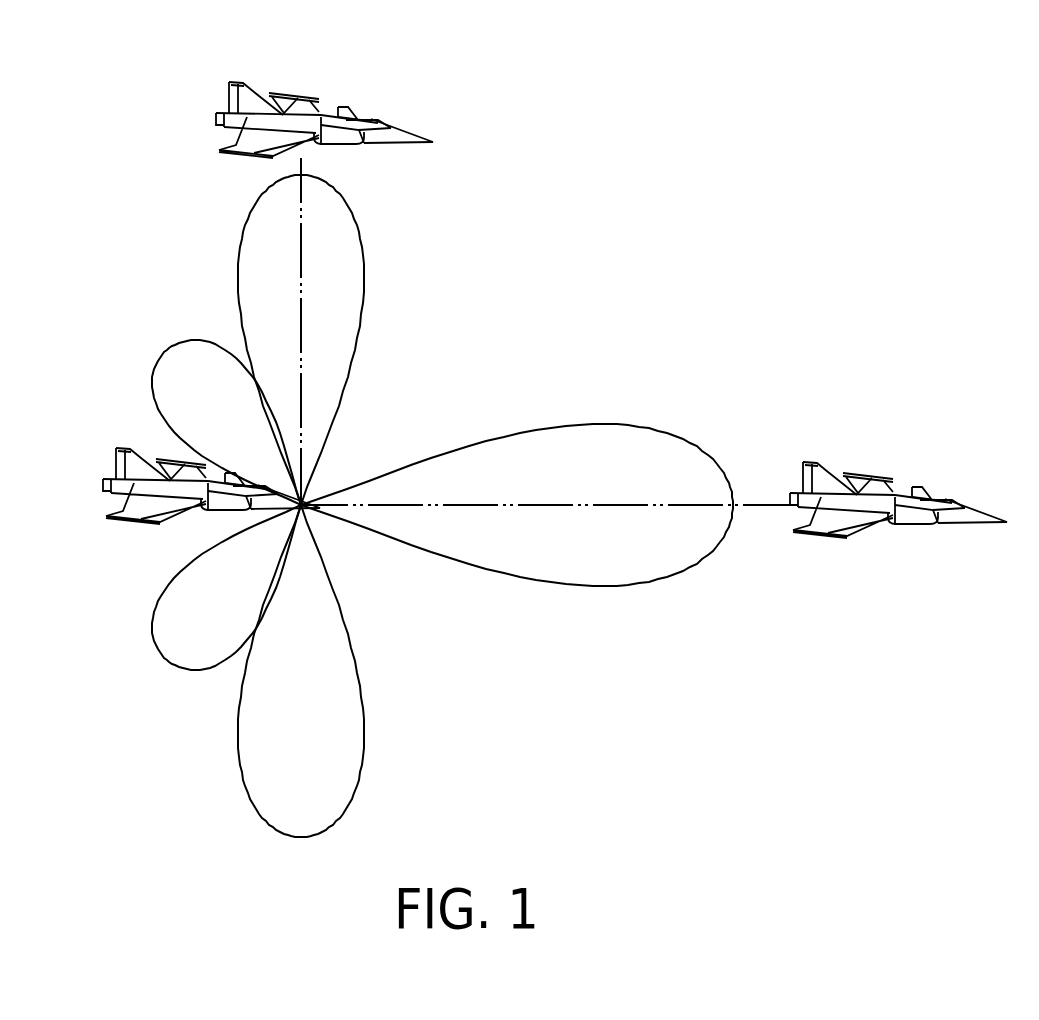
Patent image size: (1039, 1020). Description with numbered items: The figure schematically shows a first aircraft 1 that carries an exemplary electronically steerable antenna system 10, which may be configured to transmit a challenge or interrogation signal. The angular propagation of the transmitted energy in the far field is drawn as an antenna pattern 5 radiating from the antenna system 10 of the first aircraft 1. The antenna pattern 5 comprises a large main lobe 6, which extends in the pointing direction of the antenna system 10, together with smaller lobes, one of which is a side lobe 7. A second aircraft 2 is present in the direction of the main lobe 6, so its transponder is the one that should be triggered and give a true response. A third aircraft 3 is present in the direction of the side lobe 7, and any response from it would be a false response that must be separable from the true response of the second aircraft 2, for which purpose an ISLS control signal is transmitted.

The first aircraft 1 is at (117, 415).
The second aircraft 2 is at (927, 467).
The third aircraft 3 is at (375, 102).
The antenna pattern 5 is at (471, 497).
The main lobe 6 is at (643, 428).
The side lobe 7 is at (364, 263).
The electronically steerable antenna system 10 is at (320, 522).